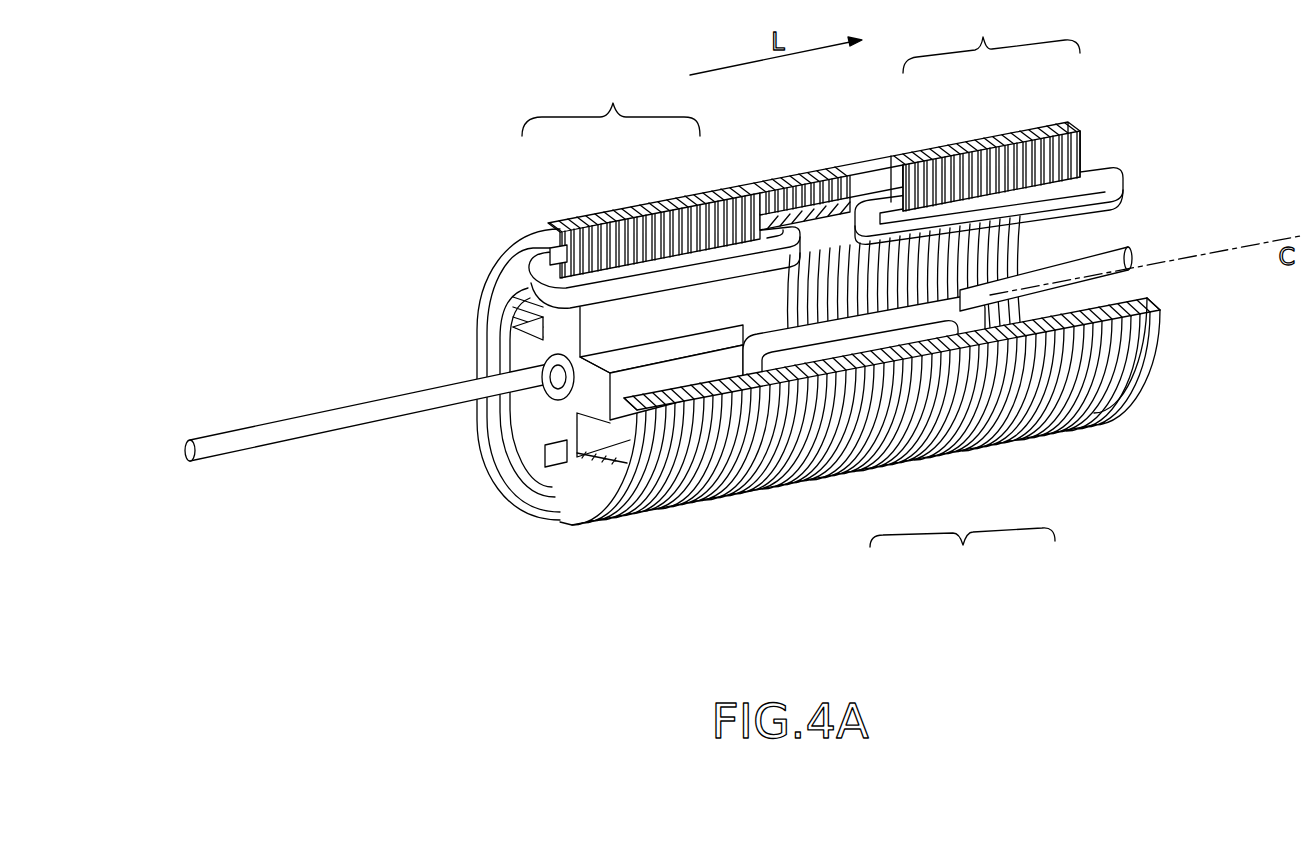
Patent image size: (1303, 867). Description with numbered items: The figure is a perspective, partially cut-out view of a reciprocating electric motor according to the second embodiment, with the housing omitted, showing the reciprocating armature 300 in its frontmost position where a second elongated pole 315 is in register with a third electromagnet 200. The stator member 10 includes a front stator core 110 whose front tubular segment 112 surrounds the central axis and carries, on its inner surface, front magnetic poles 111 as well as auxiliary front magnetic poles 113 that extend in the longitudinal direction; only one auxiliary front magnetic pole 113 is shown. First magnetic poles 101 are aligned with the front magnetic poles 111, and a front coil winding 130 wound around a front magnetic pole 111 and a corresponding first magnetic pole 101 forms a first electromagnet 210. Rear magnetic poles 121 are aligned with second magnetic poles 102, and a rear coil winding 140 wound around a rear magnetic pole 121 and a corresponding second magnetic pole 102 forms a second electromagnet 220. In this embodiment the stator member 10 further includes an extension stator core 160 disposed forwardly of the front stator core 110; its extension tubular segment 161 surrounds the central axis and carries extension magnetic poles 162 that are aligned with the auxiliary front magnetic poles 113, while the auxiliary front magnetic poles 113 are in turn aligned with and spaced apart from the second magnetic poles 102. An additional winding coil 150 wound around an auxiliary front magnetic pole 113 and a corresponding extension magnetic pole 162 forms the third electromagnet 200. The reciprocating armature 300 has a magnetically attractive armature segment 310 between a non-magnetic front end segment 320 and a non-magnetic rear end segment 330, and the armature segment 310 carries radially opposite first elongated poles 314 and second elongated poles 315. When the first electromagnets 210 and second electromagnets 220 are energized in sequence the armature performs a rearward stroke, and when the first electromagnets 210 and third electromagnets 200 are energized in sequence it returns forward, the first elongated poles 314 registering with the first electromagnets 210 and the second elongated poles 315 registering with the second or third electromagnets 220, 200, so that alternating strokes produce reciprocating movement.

The stator member 10 is at (1098, 427).
The first magnetic pole 101 is at (933, 345).
The second magnetic pole 102 is at (908, 193).
The front stator core 110 is at (747, 187).
The front magnetic pole 111 is at (835, 385).
The front tubular segment 112 is at (783, 197).
The auxiliary front magnetic pole 113 is at (727, 238).
The rear magnetic pole 121 is at (1010, 178).
The front coil winding 130 is at (968, 325).
The rear coil winding 140 is at (1093, 165).
The additional winding coil 150 is at (540, 258).
The extension stator core 160 is at (650, 514).
The extension tubular segment 161 is at (587, 513).
The extension magnetic pole 162 is at (610, 250).
The third electromagnet 200 is at (483, 537).
The first electromagnet 210 is at (962, 560).
The second electromagnet 220 is at (991, 37).
The reciprocating armature 300 is at (285, 410).
The armature segment 310 is at (540, 420).
The first elongated pole 314 is at (527, 357).
The second elongated pole 315 is at (523, 287).
The front end segment 320 is at (215, 455).
The rear end segment 330 is at (1137, 262).